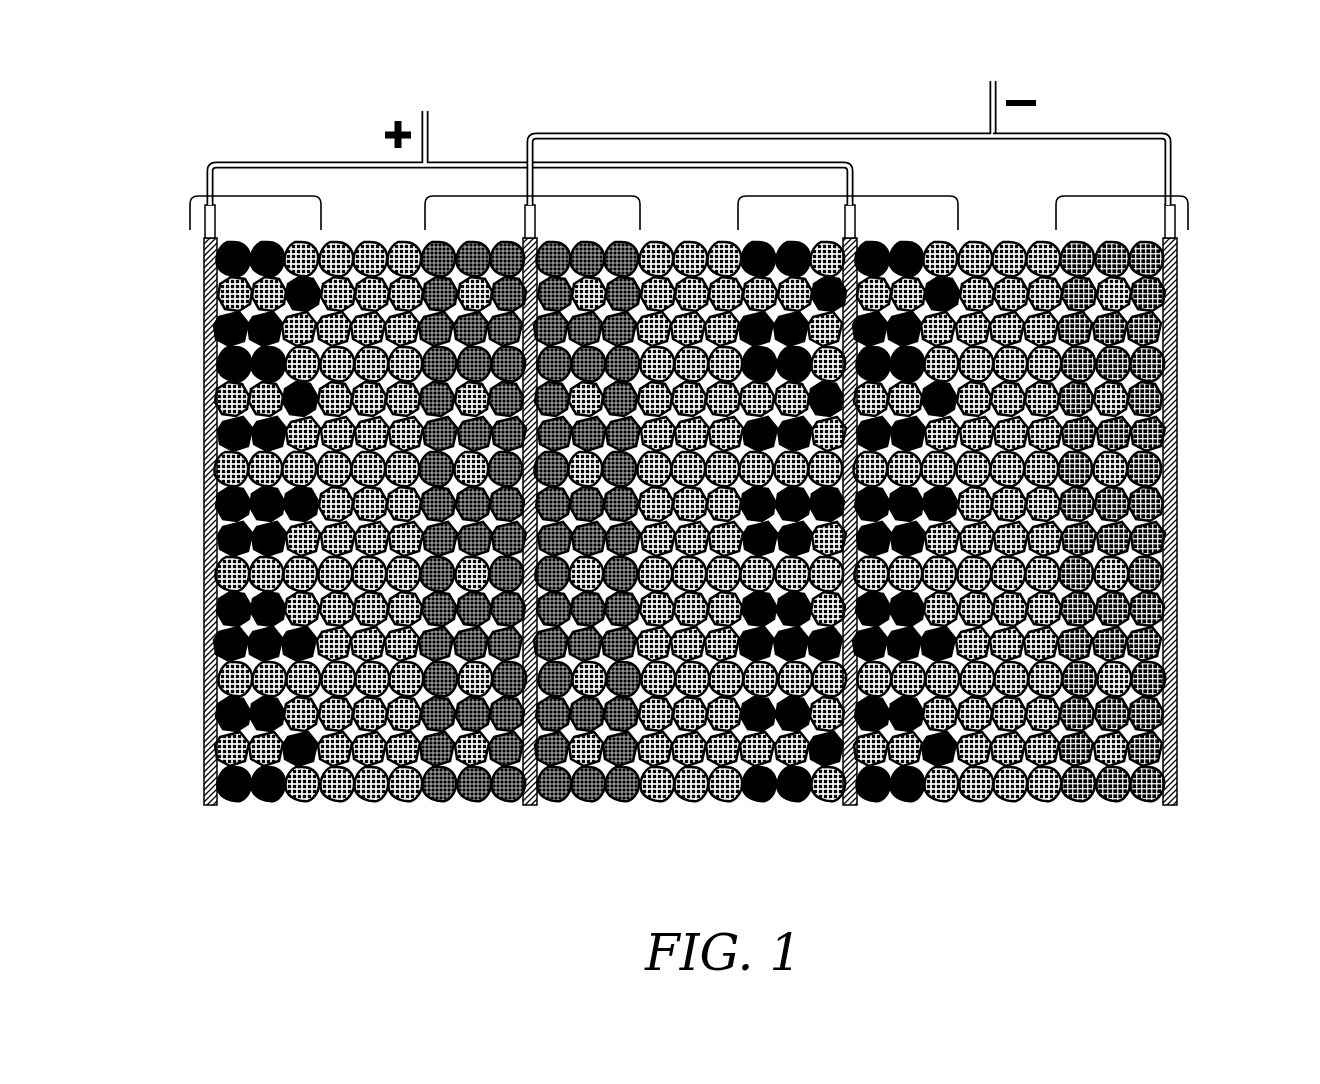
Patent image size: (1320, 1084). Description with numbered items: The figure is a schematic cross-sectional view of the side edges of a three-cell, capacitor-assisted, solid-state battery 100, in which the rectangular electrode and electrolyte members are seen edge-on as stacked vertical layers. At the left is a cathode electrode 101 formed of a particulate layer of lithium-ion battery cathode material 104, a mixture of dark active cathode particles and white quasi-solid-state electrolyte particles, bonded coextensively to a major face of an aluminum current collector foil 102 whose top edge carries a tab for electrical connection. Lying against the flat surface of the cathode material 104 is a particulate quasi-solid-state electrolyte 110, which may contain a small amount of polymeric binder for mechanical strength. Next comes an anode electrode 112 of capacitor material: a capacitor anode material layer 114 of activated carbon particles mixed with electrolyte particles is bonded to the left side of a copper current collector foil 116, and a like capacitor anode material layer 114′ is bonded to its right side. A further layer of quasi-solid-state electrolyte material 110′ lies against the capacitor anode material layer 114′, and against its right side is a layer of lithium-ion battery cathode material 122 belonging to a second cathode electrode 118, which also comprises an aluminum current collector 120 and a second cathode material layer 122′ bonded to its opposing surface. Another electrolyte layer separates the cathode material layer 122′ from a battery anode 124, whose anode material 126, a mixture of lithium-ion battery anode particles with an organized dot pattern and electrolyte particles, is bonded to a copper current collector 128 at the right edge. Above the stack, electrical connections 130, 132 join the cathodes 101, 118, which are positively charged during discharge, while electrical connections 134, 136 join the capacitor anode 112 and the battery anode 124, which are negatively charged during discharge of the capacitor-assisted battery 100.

The capacitor-assisted solid-state battery 100 is at (1213, 158).
The cathode electrode 101 is at (234, 176).
The current collector foil 102 is at (196, 735).
The lithium-ion battery cathode material 104 is at (270, 816).
The quasi-solid-state electrolyte 110 is at (359, 800).
The quasi-solid-state electrolyte material layer 110′ is at (683, 800).
The anode electrode 112 is at (493, 178).
The capacitor anode material layer 114 is at (463, 800).
The capacitor anode material layer 114′ is at (580, 800).
The current collector foil 116 is at (521, 798).
The cathode electrode 118 is at (879, 178).
The aluminum current collector 120 is at (841, 798).
The lithium-ion battery cathode material layer 122 is at (785, 800).
The lithium-ion battery cathode material layer 122′ is at (898, 800).
The battery anode 124 is at (1116, 178).
The anode material 126 is at (1104, 800).
The copper current collector 128 is at (1170, 670).
The electrical connection 130 is at (330, 153).
The electrical connection 132 is at (628, 153).
The electrical connection 134 is at (795, 125).
The electrical connection 136 is at (1095, 125).